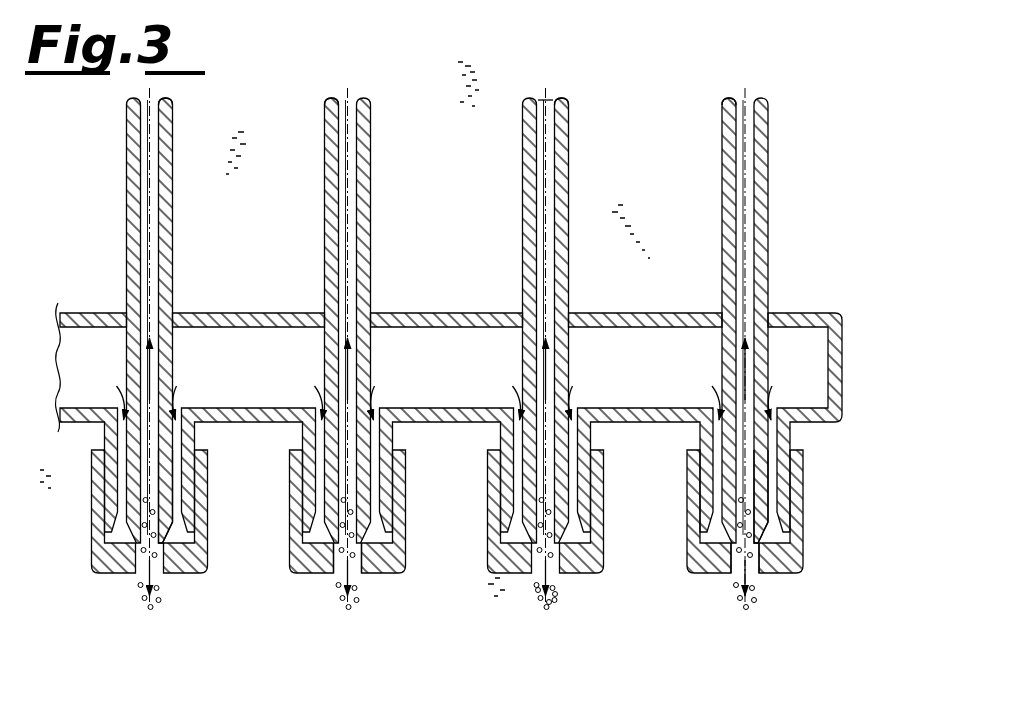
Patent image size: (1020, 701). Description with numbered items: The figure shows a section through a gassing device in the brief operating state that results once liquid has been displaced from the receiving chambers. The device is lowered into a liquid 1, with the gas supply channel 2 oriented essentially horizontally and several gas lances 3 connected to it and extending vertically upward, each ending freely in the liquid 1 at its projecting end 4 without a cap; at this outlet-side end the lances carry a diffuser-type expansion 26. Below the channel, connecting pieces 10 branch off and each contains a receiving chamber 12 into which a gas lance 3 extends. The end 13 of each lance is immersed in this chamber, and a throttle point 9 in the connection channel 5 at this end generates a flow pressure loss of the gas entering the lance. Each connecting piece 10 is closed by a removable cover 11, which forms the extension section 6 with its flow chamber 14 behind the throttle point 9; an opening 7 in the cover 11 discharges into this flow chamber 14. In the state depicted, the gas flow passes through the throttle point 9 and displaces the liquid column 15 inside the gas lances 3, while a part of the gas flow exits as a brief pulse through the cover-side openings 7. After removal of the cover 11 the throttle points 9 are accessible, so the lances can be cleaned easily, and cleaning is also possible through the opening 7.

The liquid 1 is at (458, 85).
The gas supply channel 2 is at (432, 394).
The gas lances 3 is at (175, 237).
The projecting end 4 is at (722, 112).
The connection channel 5 is at (173, 473).
The extension section 6 is at (553, 581).
The opening 7 is at (373, 547).
The throttle point 9 is at (700, 572).
The connecting pieces 10 is at (393, 433).
The cover 11 is at (399, 572).
The receiving chamber 12 is at (720, 463).
The end of the gas lances 13 is at (770, 528).
The flow chamber 14 is at (318, 571).
The liquid column 15 is at (326, 118).
The diffuser-type expansion 26 is at (545, 100).